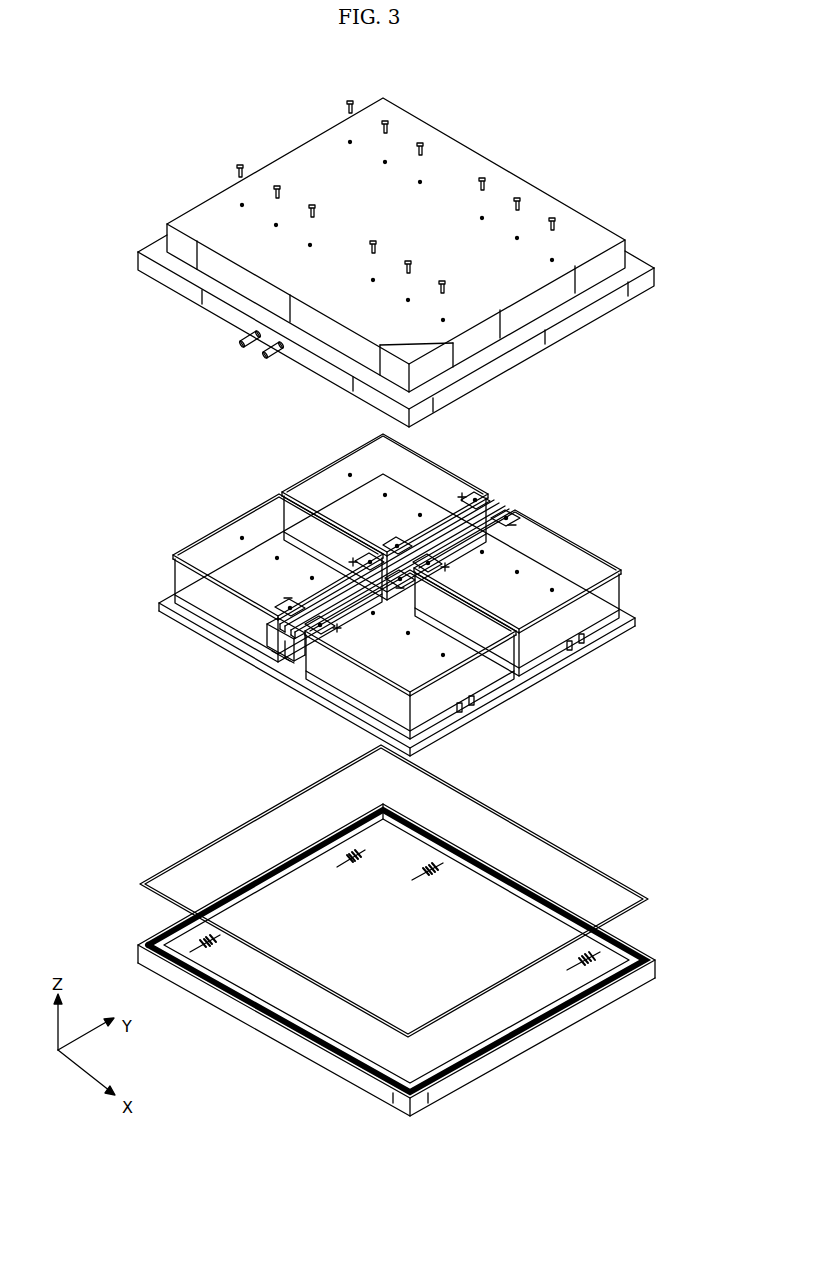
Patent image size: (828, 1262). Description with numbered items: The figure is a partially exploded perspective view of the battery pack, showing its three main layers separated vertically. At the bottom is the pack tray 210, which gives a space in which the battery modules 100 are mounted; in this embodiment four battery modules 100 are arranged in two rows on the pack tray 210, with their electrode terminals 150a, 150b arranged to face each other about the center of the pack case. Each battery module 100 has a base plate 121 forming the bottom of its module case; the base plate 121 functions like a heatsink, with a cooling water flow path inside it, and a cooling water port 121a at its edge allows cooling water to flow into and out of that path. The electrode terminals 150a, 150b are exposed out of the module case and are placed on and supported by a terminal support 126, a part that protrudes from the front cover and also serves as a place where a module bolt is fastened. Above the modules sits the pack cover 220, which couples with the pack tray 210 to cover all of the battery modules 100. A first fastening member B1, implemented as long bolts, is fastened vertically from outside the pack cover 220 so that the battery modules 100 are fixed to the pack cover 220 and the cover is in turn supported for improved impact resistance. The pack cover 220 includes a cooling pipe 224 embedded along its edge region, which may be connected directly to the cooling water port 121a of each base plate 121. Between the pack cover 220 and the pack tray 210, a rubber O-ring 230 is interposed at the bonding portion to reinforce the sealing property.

The battery module 100 is at (409, 594).
The base plate 121 is at (347, 705).
The cooling water port 121a is at (585, 642).
The terminal support 126 is at (276, 629).
The electrode terminal 150a is at (492, 502).
The electrode terminal 150b is at (249, 657).
The pack tray 210 is at (649, 946).
The pack cover 220 is at (514, 151).
The cooling pipe 224 is at (285, 356).
The O-ring 230 is at (595, 875).
The first fastening member B1 is at (350, 99).